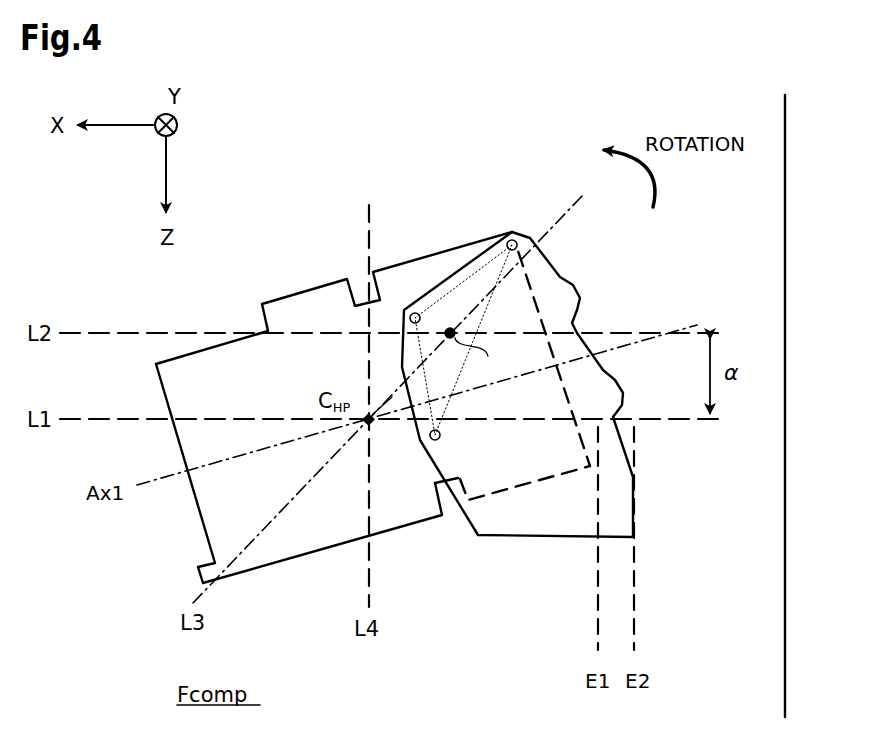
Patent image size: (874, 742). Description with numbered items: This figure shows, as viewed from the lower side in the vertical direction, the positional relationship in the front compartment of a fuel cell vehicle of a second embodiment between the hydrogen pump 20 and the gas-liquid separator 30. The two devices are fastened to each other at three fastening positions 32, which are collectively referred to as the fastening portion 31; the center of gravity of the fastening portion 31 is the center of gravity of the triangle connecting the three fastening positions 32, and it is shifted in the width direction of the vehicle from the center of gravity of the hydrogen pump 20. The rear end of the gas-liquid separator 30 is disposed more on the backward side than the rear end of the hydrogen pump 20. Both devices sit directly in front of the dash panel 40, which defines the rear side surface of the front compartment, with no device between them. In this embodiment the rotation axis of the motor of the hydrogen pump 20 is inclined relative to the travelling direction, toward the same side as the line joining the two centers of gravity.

The hydrogen pump 20 is at (243, 283).
The gas-liquid separator 30 is at (590, 277).
The fastening portion 31 is at (565, 178).
The fastening positions 32 is at (414, 312).
The dash panel 40 is at (836, 513).